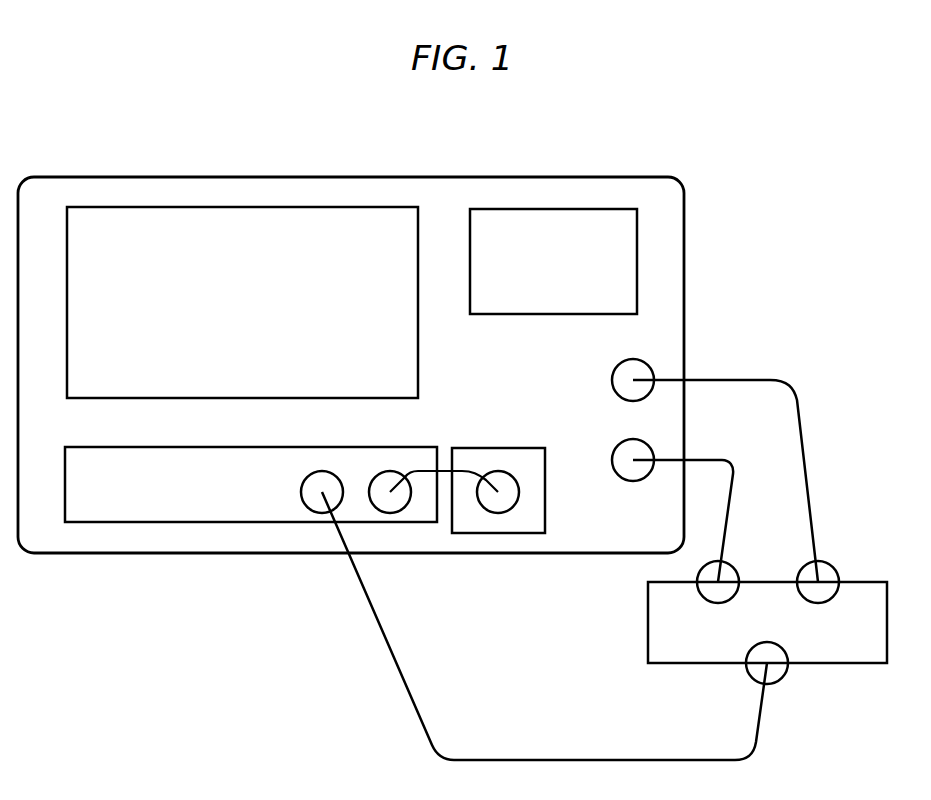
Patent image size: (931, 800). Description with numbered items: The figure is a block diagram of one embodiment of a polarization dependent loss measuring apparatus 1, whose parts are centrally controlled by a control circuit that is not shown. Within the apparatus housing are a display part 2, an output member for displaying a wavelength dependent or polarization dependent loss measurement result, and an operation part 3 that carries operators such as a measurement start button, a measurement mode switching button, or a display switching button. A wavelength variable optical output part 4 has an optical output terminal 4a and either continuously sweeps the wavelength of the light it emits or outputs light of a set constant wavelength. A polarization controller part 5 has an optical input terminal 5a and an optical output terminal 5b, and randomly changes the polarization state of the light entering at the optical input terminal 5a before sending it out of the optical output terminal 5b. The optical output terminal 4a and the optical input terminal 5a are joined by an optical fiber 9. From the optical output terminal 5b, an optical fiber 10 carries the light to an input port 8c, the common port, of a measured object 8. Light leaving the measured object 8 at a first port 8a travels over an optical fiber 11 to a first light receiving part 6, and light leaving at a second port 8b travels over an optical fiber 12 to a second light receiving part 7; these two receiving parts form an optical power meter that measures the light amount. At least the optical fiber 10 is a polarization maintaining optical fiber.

The polarization dependent loss measuring apparatus 1 is at (352, 178).
The display part 2 is at (244, 207).
The operation part 3 is at (553, 209).
The wavelength variable optical output part 4 is at (545, 534).
The optical output terminal 4a is at (499, 514).
The polarization controller part 5 is at (250, 524).
The optical input terminal 5a is at (391, 514).
The optical output terminal 5b is at (320, 514).
The first light receiving part 6 is at (652, 366).
The second light receiving part 7 is at (652, 446).
The measured object 8 is at (648, 621).
The first port 8a is at (836, 570).
The second port 8b is at (736, 570).
The input port 8c is at (782, 678).
The optical fiber 9 is at (445, 472).
The optical fiber 10 is at (594, 759).
The optical fiber 11 is at (808, 486).
The optical fiber 12 is at (732, 478).